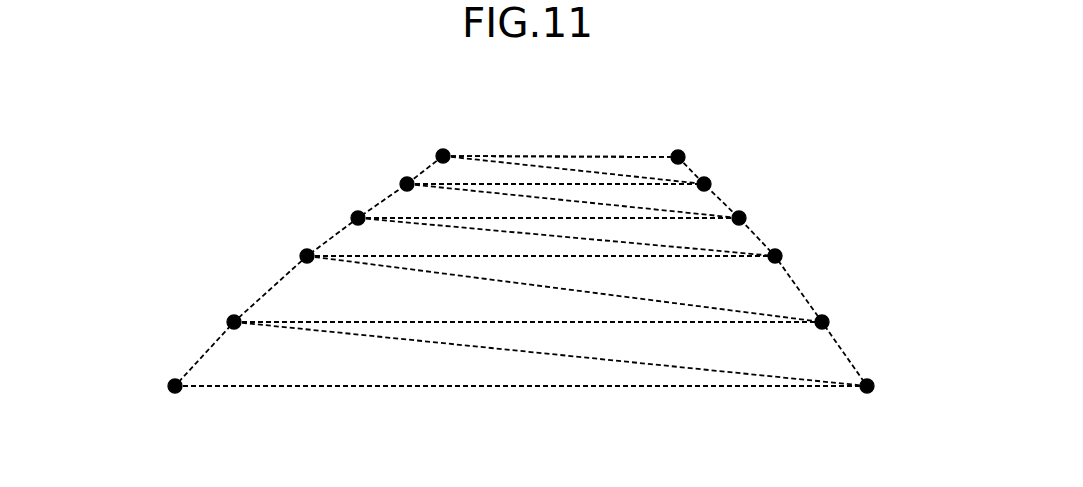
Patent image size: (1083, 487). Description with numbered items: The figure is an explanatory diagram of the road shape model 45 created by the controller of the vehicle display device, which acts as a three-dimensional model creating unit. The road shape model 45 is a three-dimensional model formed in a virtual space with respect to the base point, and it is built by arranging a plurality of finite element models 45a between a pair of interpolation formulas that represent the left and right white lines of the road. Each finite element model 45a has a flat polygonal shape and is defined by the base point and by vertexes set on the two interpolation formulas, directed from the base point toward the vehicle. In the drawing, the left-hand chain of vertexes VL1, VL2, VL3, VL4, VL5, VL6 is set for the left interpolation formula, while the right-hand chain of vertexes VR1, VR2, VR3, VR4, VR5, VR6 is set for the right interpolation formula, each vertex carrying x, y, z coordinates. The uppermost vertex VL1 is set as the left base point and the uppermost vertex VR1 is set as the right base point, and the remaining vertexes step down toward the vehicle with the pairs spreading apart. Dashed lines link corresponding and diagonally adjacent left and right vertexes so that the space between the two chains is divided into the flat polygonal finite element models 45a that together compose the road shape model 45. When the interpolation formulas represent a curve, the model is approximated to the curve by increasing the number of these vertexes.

The road shape model 45 is at (620, 130).
The finite element model 45a is at (563, 163).
The vertex VL1(x, y, z) VL1 is at (435, 158).
The vertex VL2(x, y, z) VL2 is at (401, 185).
The vertex VL3(x, y, z) VL3 is at (352, 219).
The vertex VL4(x, y, z) VL4 is at (300, 257).
The vertex VL5(x, y, z) VL5 is at (228, 323).
The vertex VL6(x, y, z) VL6 is at (175, 393).
The vertex VR1(x, y, z) VR1 is at (685, 158).
The vertex VR2(x, y, z) VR2 is at (711, 185).
The vertex VR3(x, y, z) VR3 is at (746, 219).
The vertex VR4(x, y, z) VR4 is at (782, 257).
The vertex VR5(x, y, z) VR5 is at (829, 323).
The vertex VR6(x, y, z) VR6 is at (867, 393).